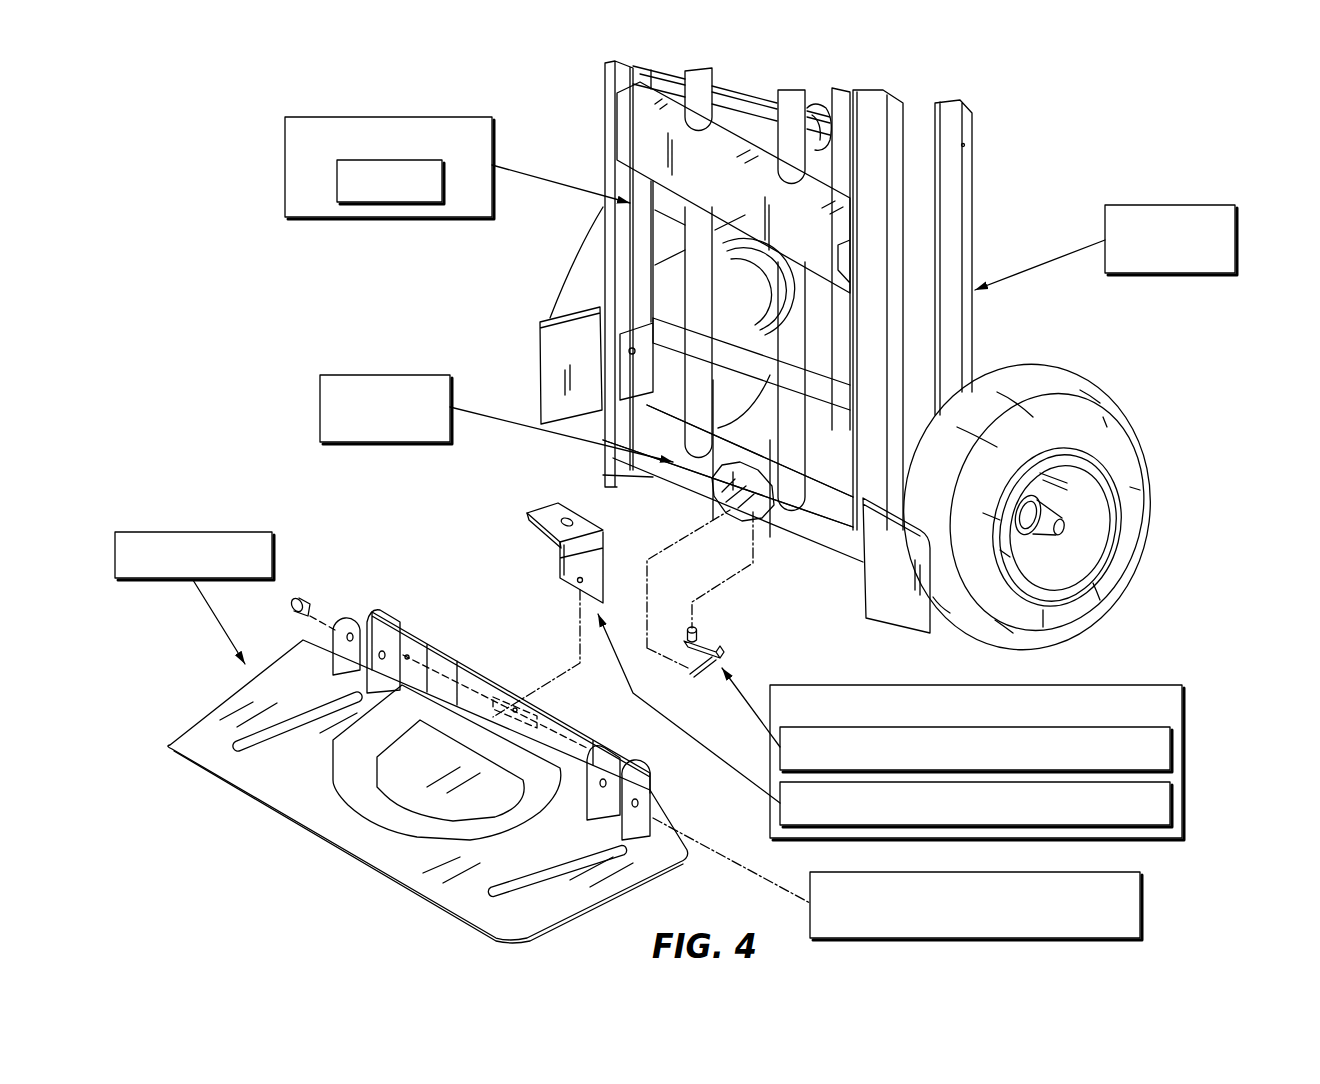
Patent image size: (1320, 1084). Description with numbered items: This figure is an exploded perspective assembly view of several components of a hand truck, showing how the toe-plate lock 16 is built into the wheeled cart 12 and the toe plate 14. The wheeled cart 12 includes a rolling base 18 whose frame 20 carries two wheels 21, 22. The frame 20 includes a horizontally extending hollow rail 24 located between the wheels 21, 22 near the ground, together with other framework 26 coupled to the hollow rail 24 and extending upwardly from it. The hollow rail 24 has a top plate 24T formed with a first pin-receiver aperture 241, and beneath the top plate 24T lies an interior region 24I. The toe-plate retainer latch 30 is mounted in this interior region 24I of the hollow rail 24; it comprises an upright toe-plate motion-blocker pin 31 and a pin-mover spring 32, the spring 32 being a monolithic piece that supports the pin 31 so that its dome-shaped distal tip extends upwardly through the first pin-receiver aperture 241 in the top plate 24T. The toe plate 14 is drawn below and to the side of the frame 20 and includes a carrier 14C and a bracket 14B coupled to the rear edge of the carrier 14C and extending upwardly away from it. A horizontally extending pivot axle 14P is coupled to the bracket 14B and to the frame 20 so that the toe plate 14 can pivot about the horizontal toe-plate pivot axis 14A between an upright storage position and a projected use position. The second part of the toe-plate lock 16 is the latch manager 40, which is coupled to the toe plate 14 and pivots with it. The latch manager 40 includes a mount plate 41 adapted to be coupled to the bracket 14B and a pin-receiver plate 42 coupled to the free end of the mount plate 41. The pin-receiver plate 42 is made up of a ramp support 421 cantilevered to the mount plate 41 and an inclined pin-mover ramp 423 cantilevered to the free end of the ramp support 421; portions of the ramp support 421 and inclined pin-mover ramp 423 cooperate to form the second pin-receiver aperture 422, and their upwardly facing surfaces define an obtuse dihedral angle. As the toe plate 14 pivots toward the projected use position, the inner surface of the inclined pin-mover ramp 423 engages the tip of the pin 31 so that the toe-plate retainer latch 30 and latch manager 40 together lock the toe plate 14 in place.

The wheeled cart 12 is at (1170, 205).
The toe plate 14 is at (192, 530).
The horizontal toe-plate pivot axis 14A is at (1143, 910).
The bracket 14B is at (485, 665).
The carrier 14C is at (273, 782).
The pivot axle 14P is at (302, 602).
The toe-plate lock 16 is at (1132, 692).
The rolling base 18 is at (285, 168).
The frame 20 is at (337, 183).
The wheel 21 is at (553, 270).
The wheel 22 is at (1123, 397).
The hollow rail 24 is at (365, 374).
The interior region 24I is at (707, 490).
The top plate 24T is at (813, 503).
The first pin-receiver aperture 241 is at (745, 462).
The framework 26 is at (815, 98).
The toe-plate retainer latch 30 is at (1172, 748).
The toe-plate motion-blocker pin 31 is at (711, 626).
The pin-mover spring 32 is at (728, 662).
The latch manager 40 is at (1175, 803).
The mount plate 41 is at (555, 557).
The pin-receiver plate 42 is at (457, 579).
The ramp support 421 is at (550, 502).
The second pin-receiver aperture 422 is at (567, 516).
The inclined pin-mover ramp 423 is at (527, 520).